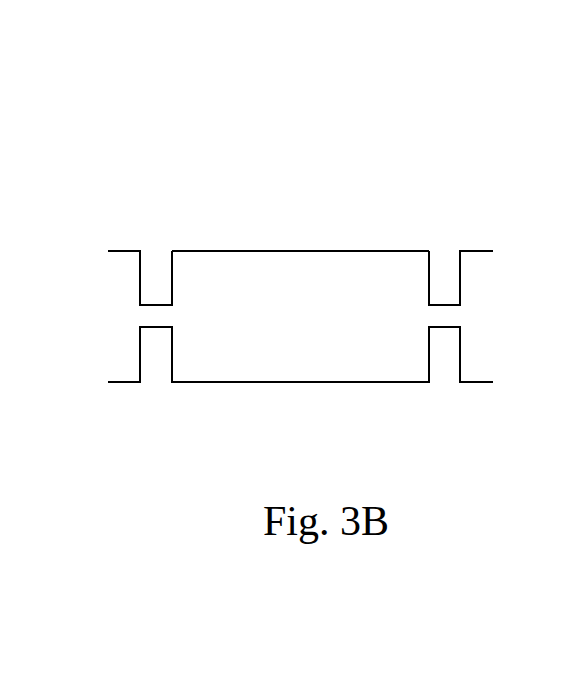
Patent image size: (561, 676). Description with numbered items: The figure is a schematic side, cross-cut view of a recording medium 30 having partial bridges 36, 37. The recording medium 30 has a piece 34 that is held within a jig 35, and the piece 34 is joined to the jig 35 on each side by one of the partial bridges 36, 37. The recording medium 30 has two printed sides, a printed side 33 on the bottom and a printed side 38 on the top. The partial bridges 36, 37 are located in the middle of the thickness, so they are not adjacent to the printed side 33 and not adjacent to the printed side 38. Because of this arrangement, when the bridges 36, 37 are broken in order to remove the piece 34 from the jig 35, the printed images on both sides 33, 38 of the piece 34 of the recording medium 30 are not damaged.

The recording medium 30 is at (108, 145).
The printed side 33 is at (305, 383).
The piece 34 is at (332, 283).
The jig 35 is at (122, 280).
The partial bridge 36 is at (158, 317).
The partial bridge 37 is at (440, 313).
The printed side 38 is at (241, 250).